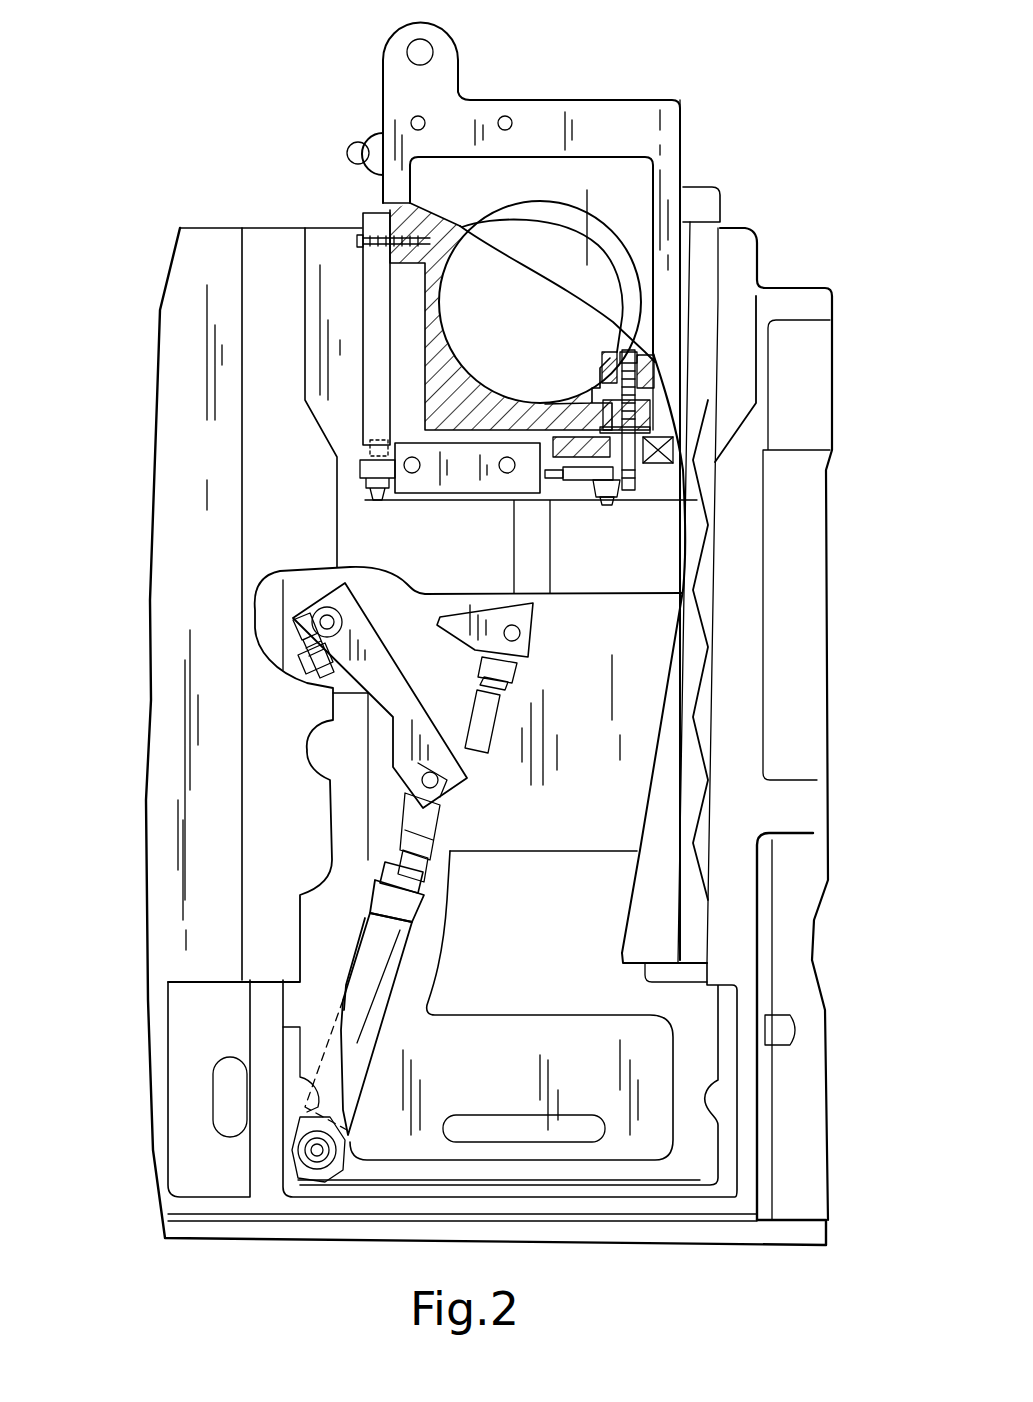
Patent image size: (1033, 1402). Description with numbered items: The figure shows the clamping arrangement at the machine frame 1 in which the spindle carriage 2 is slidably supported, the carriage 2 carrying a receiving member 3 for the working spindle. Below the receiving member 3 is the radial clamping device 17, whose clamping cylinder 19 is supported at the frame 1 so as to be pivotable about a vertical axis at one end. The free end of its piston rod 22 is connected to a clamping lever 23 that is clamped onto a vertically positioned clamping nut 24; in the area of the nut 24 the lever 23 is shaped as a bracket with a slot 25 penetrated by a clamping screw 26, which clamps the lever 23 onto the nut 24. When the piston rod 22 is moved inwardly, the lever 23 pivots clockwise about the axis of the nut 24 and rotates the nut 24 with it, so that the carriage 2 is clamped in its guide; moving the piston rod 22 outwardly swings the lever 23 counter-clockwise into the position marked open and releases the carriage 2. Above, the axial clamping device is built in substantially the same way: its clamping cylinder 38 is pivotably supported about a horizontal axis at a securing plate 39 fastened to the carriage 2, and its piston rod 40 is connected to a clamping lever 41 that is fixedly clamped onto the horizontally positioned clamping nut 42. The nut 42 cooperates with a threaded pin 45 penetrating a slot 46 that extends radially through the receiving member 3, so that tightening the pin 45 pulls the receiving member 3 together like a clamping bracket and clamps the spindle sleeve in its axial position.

The machine frame 1 is at (207, 392).
The spindle carriage 2 is at (597, 137).
The receiving member 3 is at (537, 407).
The radial clamping device 17 is at (357, 918).
The clamping cylinder 19 is at (360, 1000).
The piston rod 22 is at (400, 815).
The clamping lever 23 is at (343, 653).
The clamping nut 24 is at (310, 612).
The slot 25 is at (308, 648).
The clamping screw 26 is at (323, 675).
The clamping cylinder 38 is at (362, 447).
The securing plate 39 is at (374, 318).
The piston rod 40 is at (610, 490).
The clamping lever 41 is at (680, 440).
The clamping nut 42 is at (640, 477).
The threaded pin 45 is at (637, 400).
The slot 46 is at (658, 347).